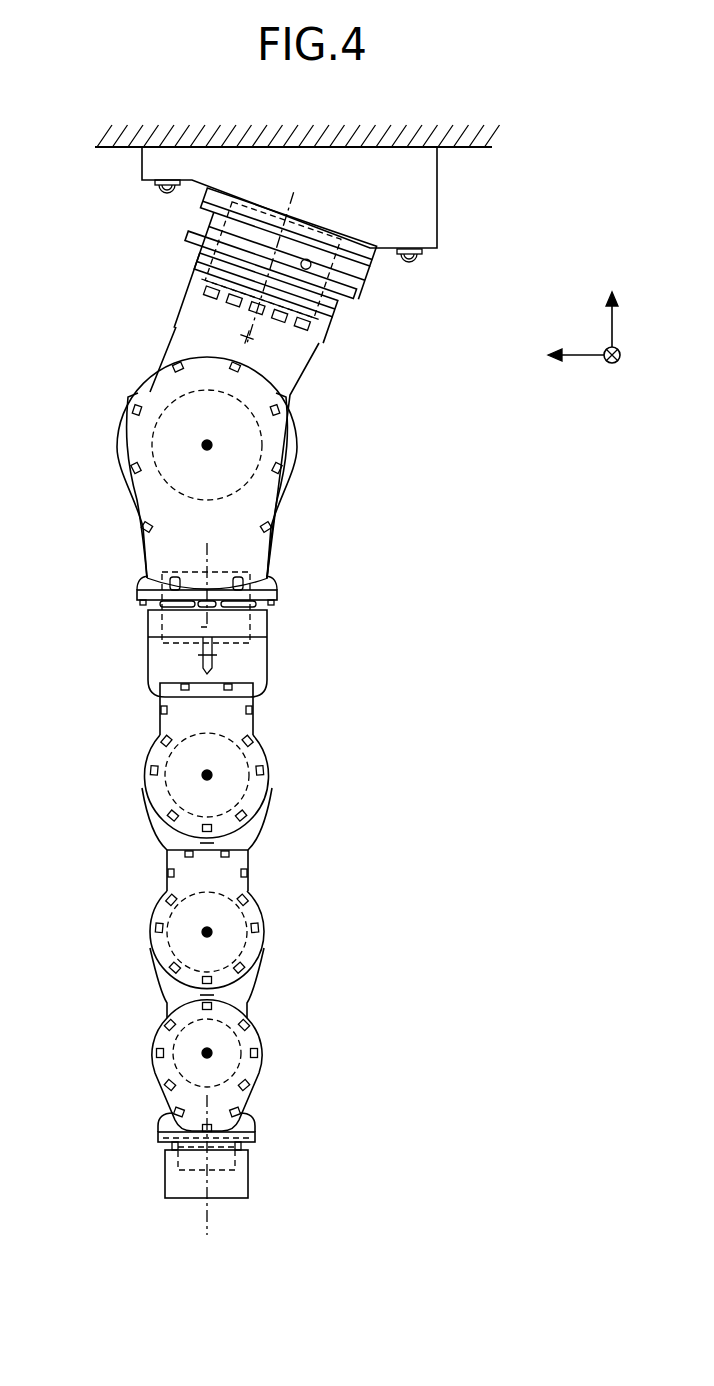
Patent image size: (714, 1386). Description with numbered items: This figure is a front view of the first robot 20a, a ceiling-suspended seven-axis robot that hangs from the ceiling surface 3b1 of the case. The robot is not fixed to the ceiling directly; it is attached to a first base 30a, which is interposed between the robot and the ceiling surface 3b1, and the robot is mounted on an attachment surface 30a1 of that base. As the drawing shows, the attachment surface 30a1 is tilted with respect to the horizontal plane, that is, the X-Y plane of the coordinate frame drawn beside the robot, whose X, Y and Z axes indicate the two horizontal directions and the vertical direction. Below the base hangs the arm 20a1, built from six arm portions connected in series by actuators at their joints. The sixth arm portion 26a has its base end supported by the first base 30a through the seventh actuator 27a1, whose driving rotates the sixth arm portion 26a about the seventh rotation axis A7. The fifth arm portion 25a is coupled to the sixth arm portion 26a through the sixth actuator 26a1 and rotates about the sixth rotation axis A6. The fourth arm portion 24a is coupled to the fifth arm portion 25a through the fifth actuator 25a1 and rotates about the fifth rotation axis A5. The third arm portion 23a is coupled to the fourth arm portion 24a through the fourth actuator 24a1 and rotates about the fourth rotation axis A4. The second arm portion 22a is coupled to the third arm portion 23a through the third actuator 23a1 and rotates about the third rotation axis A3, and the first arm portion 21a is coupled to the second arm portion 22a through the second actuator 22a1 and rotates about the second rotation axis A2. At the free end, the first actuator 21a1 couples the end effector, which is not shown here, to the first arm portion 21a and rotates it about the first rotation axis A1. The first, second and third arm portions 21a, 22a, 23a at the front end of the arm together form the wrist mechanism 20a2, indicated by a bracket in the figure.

The ceiling surface 3b1 is at (492, 148).
The first base 30a is at (430, 201).
The attachment surface 30a1 is at (378, 250).
The first robot 20a is at (253, 713).
The arm 20a1 is at (214, 442).
The wrist mechanism 20a2 is at (233, 1014).
The seventh actuator 27a1 is at (227, 217).
The seventh rotation axis A7 is at (246, 323).
The sixth arm portion 26a is at (293, 373).
The sixth actuator 26a1 is at (165, 397).
The sixth rotation axis A6 is at (207, 445).
The fifth arm portion 25a is at (262, 548).
The fifth actuator 25a1 is at (162, 618).
The fifth rotation axis A5 is at (200, 628).
The fourth arm portion 24a is at (243, 700).
The fourth actuator 24a1 is at (165, 770).
The fourth rotation axis A4 is at (207, 775).
The third arm portion 23a is at (245, 847).
The third actuator 23a1 is at (167, 925).
The third rotation axis A3 is at (207, 932).
The second arm portion 22a is at (242, 990).
The second actuator 22a1 is at (173, 1045).
The second rotation axis A2 is at (207, 1053).
The first arm portion 21a is at (245, 1181).
The first actuator 21a1 is at (178, 1157).
The first rotation axis A1 is at (207, 1205).
The X axis X is at (620, 367).
The Y axis Y is at (564, 355).
The Z axis Z is at (611, 306).